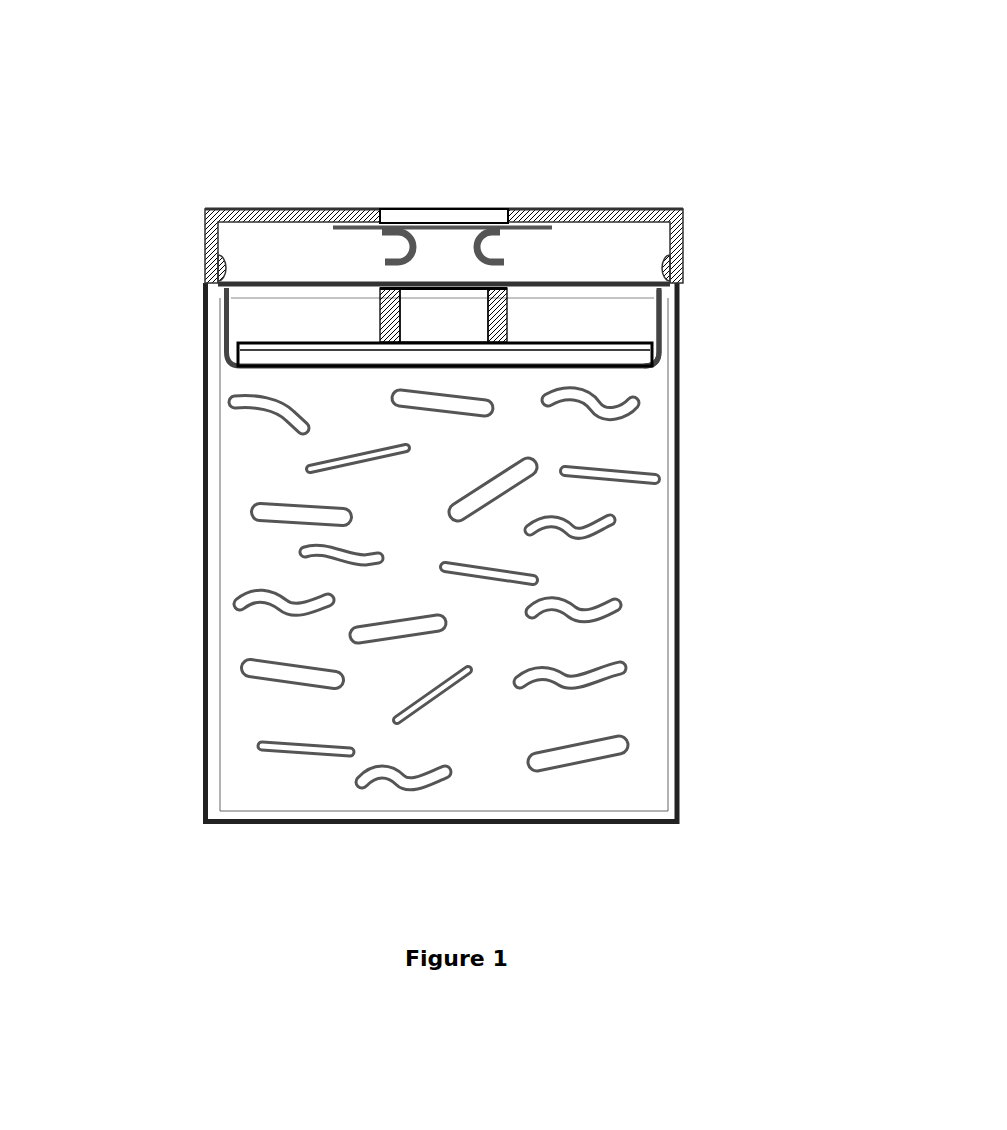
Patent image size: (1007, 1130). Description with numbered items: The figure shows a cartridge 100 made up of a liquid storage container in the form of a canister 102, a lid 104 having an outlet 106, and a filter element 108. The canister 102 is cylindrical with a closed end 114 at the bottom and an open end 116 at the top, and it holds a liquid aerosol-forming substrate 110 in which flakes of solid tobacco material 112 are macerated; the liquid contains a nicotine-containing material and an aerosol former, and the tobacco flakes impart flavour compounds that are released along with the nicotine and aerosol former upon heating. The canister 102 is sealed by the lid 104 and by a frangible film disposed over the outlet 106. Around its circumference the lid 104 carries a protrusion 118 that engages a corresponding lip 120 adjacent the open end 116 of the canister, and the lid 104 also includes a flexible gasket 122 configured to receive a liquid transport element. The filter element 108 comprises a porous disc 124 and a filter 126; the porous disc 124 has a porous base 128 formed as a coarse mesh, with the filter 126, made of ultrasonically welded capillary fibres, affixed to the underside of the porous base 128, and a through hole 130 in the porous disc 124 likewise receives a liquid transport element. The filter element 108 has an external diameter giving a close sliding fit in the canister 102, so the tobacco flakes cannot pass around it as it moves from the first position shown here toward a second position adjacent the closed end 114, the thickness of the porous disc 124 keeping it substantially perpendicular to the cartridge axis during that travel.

The cartridge 100 is at (160, 152).
The canister 102 is at (216, 550).
The lid 104 is at (332, 220).
The outlet 106 is at (430, 218).
The filter element 108 is at (656, 323).
The liquid aerosol-forming substrate 110 is at (235, 734).
The flakes of solid tobacco material 112 is at (604, 750).
The closed end 114 is at (543, 813).
The open end 116 is at (212, 303).
The protrusion 118 is at (675, 267).
The lip 120 is at (228, 272).
The flexible gasket 122 is at (470, 333).
The porous disc 124 is at (242, 317).
The filter 126 is at (650, 370).
The porous base 128 is at (255, 357).
The through hole 130 is at (507, 300).